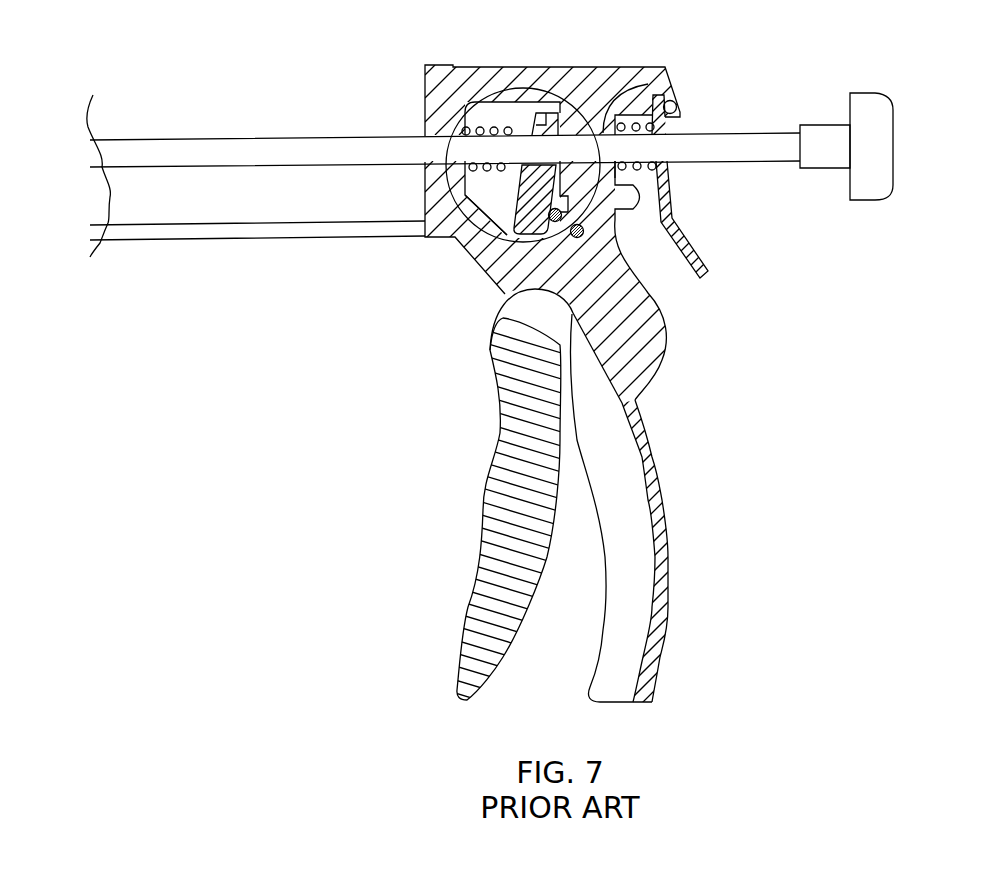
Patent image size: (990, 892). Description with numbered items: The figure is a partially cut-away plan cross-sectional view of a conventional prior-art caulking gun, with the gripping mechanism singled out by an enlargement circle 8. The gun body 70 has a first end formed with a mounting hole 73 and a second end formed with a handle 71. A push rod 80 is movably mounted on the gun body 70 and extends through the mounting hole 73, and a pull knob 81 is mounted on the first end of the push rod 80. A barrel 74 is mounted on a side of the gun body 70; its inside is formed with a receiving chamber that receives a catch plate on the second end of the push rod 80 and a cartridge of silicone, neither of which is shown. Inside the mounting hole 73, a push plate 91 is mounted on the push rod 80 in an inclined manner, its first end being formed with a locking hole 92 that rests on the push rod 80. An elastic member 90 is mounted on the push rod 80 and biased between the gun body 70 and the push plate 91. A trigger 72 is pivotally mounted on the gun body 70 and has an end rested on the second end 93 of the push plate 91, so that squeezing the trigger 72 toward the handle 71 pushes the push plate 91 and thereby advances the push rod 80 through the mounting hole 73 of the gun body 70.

The detail circle of gripping mechanism 8 is at (447, 212).
The gun body 70 is at (659, 444).
The handle 71 is at (660, 533).
The trigger 72 is at (490, 462).
The mounting hole 73 is at (425, 110).
The barrel 74 is at (228, 177).
The push rod 80 is at (774, 163).
The pull knob 81 is at (880, 182).
The elastic member 90 is at (494, 126).
The push plate 91 is at (508, 208).
The locking hole 92 is at (538, 112).
The second end of the push plate 93 is at (503, 238).